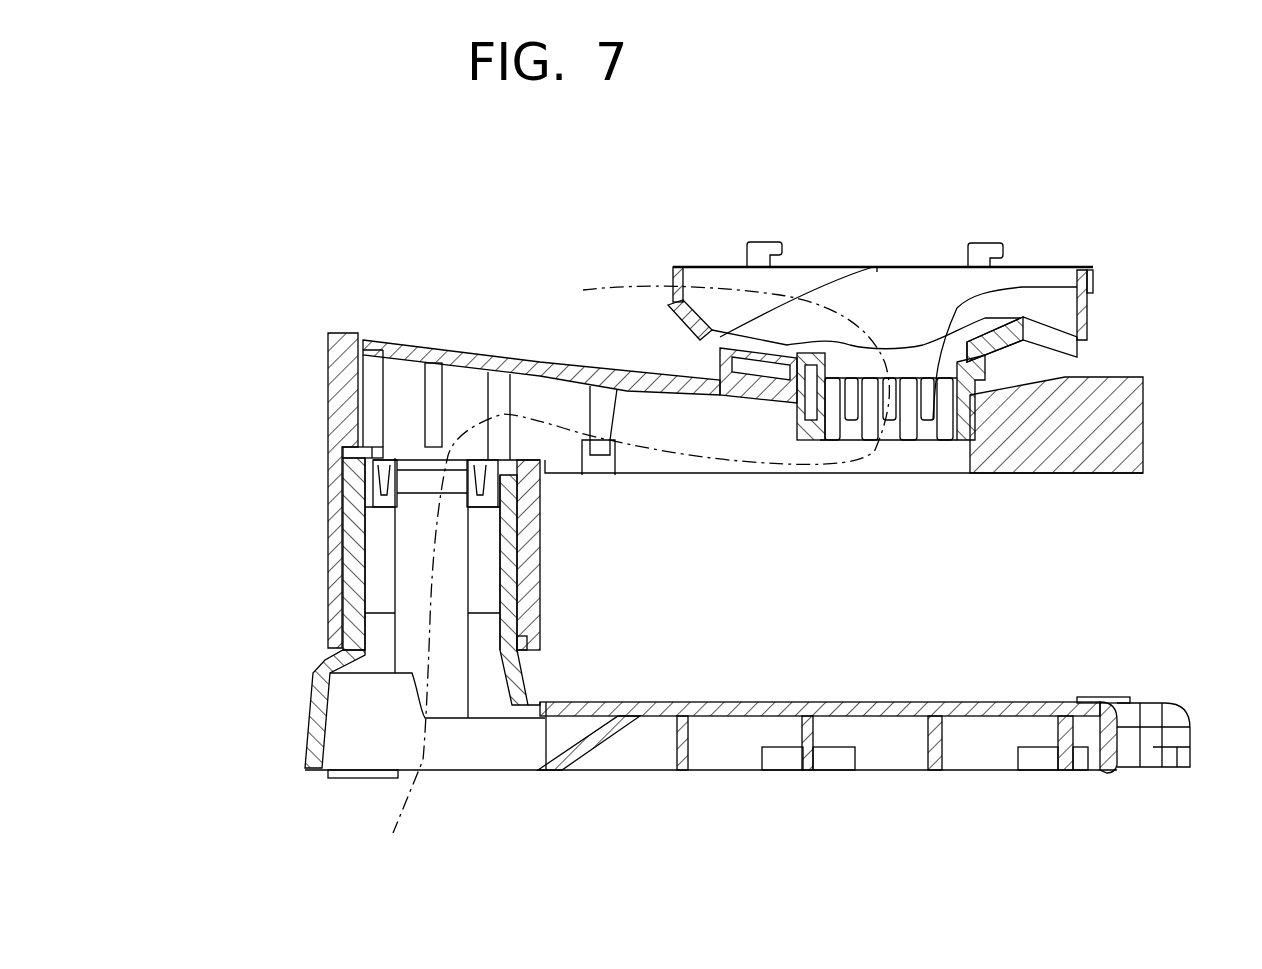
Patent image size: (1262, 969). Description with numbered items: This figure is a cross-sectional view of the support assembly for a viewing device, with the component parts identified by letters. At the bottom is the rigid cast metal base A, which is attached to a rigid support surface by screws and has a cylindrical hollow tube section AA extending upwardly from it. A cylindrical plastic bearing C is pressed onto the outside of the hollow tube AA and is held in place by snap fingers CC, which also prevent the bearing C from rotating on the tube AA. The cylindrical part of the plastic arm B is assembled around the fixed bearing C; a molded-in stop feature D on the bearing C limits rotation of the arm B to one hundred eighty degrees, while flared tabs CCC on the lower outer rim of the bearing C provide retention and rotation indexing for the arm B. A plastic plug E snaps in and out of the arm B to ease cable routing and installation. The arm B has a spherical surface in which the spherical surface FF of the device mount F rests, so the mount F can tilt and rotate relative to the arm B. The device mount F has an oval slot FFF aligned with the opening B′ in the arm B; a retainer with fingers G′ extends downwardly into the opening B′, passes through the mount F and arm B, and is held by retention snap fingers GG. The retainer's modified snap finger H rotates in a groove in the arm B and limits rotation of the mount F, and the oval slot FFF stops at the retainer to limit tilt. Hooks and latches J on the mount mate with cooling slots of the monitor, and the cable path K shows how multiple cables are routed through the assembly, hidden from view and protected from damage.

The rigid cast metal base A is at (302, 752).
The arm B is at (327, 367).
The cylindrical plastic bearing C is at (350, 528).
The cylindrical hollow tube section AA is at (347, 567).
The snap fingers CC is at (350, 498).
The flared tabs CCC is at (540, 633).
The stop feature D is at (330, 455).
The plastic plug E is at (397, 340).
The cable path K is at (613, 248).
The device mount F is at (704, 267).
The spherical surface FF is at (697, 312).
The oval slot FFF is at (877, 267).
The hooks and latches J is at (767, 243).
The modified snap finger H is at (807, 433).
The fingers G′ is at (907, 430).
The retention snap fingers GG is at (967, 430).
The opening B′ is at (852, 488).